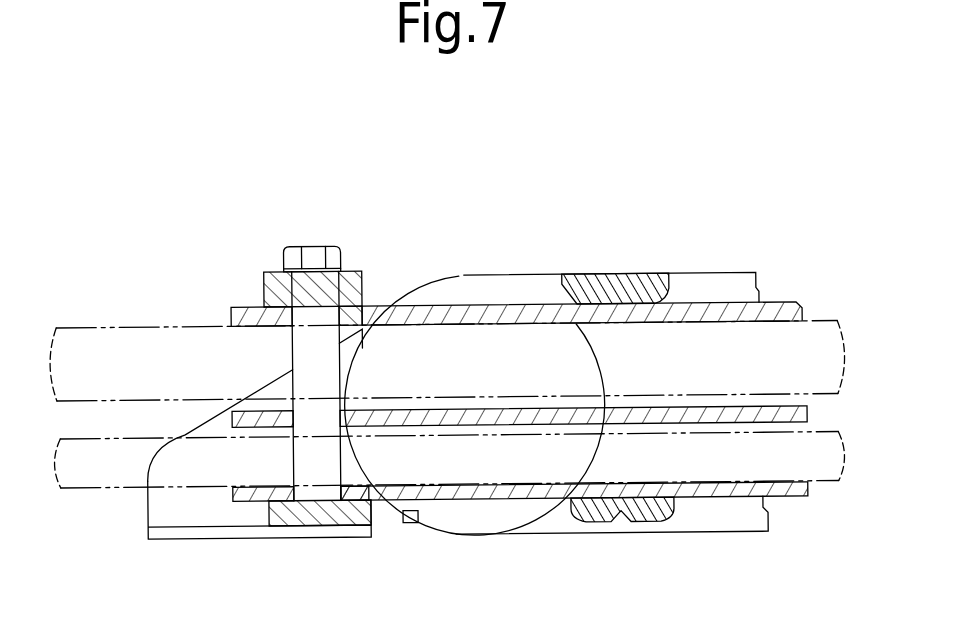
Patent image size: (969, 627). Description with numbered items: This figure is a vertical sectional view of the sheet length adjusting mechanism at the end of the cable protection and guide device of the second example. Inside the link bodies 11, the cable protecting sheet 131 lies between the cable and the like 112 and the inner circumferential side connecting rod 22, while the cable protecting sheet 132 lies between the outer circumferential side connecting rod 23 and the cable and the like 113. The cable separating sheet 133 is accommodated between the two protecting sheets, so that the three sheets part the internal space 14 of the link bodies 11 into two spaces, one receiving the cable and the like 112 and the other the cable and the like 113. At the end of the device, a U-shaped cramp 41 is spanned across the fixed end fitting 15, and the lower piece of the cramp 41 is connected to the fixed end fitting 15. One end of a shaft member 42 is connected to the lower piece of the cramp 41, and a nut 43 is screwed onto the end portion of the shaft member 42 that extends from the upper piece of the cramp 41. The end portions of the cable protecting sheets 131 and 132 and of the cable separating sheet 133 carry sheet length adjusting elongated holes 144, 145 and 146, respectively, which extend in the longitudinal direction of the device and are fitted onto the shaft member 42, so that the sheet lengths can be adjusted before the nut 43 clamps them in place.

The link bodies 11 is at (720, 274).
The internal space 14 is at (723, 460).
The fixed end fitting 15 is at (220, 540).
The inner circumferential side connecting rod 22 is at (619, 274).
The outer circumferential side connecting rod 23 is at (620, 524).
The cramp 41 is at (277, 278).
The shaft member 42 is at (315, 504).
The nut 43 is at (322, 245).
The cable and the like 112 is at (110, 332).
The cable and the like 113 is at (97, 490).
The cable protecting sheet 131 is at (480, 500).
The cable protecting sheet 132 is at (493, 275).
The cable separating sheet 133 is at (520, 427).
The sheet length adjusting elongated hole 144 is at (348, 306).
The sheet length adjusting elongated hole 145 is at (360, 530).
The sheet length adjusting elongated hole 146 is at (283, 413).